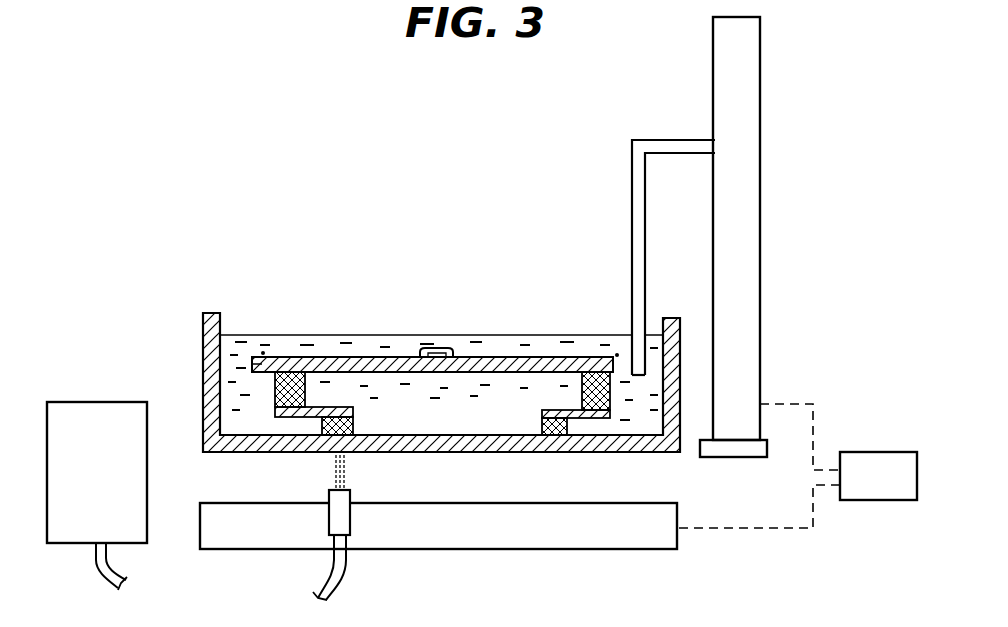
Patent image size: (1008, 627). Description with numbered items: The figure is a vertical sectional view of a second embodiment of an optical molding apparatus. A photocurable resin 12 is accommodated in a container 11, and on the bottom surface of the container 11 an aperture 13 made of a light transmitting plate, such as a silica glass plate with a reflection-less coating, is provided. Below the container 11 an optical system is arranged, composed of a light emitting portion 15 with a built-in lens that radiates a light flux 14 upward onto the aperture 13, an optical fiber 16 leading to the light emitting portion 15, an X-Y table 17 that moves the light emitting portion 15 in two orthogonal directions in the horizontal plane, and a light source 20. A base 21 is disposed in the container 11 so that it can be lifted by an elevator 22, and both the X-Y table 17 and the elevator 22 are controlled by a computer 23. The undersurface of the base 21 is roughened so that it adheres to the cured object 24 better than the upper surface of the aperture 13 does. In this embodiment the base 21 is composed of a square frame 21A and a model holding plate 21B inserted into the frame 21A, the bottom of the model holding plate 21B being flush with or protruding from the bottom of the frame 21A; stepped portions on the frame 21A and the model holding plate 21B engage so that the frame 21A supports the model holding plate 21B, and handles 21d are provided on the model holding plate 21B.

The container 11 is at (203, 338).
The photocurable resin 12 is at (230, 337).
The aperture 13 is at (603, 455).
The light flux 14 is at (347, 472).
The light emitting portion 15 is at (329, 495).
The optical fiber 16 is at (348, 577).
The X-Y table 17 is at (627, 550).
The light source 20 is at (100, 402).
The base 21 is at (470, 352).
The frame 21A is at (262, 357).
The model holding plate 21B is at (518, 360).
The handles 21d is at (433, 348).
The elevator 22 is at (762, 214).
The computer 23 is at (868, 452).
The cured object 24 is at (305, 396).